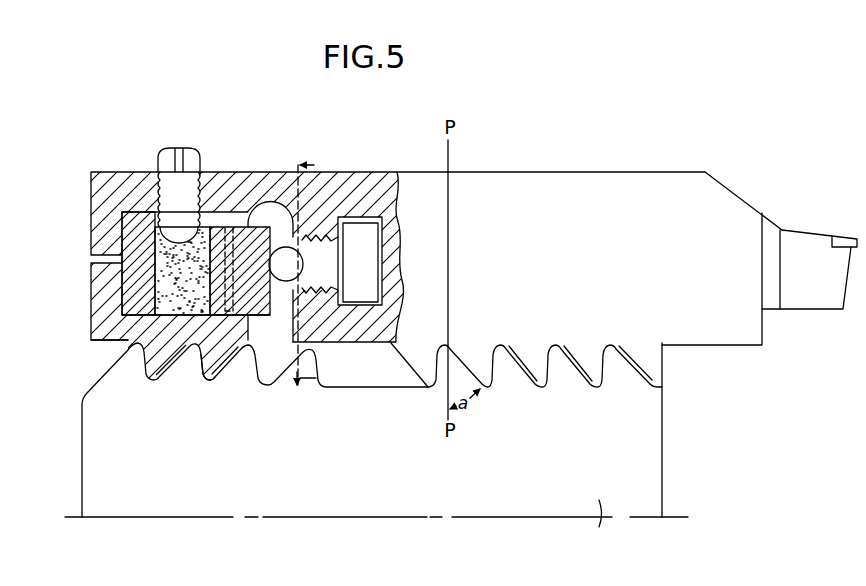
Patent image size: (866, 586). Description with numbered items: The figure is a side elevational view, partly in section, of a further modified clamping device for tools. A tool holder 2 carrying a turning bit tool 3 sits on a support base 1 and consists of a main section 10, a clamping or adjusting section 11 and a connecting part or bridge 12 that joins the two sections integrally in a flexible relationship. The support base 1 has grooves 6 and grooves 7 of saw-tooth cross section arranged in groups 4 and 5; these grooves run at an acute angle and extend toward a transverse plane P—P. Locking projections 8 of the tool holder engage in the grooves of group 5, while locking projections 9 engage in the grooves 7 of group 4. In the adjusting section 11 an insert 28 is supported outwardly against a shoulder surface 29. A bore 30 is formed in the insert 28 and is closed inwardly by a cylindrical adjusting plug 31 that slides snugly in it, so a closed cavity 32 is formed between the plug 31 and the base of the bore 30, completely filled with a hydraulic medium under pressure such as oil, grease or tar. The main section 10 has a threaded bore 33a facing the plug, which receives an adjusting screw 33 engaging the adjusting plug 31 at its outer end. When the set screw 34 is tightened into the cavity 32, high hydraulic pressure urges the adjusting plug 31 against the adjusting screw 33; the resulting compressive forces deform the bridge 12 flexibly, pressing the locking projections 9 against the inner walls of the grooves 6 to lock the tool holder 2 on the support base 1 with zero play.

The support base 1 is at (376, 527).
The tool holder 2 is at (614, 185).
The turning bit tool 3 is at (797, 243).
The group of grooves 4 is at (247, 398).
The group of grooves 5 is at (654, 448).
The grooves 6 is at (588, 387).
The grooves 7 is at (208, 381).
The locking projections 8 is at (583, 362).
The locking projections 9 is at (175, 362).
The main section 10 is at (488, 200).
The clamping section 11 is at (103, 177).
The connecting part or bridge 12 is at (296, 189).
The insert 28 is at (103, 323).
The shoulder surface 29 is at (123, 237).
The bore 30 is at (183, 271).
The adjusting plug 31 is at (253, 272).
The closed cavity 32 is at (163, 273).
The adjusting screw 33 is at (330, 265).
The threaded bore 33a is at (326, 243).
The set screw 34 is at (185, 190).